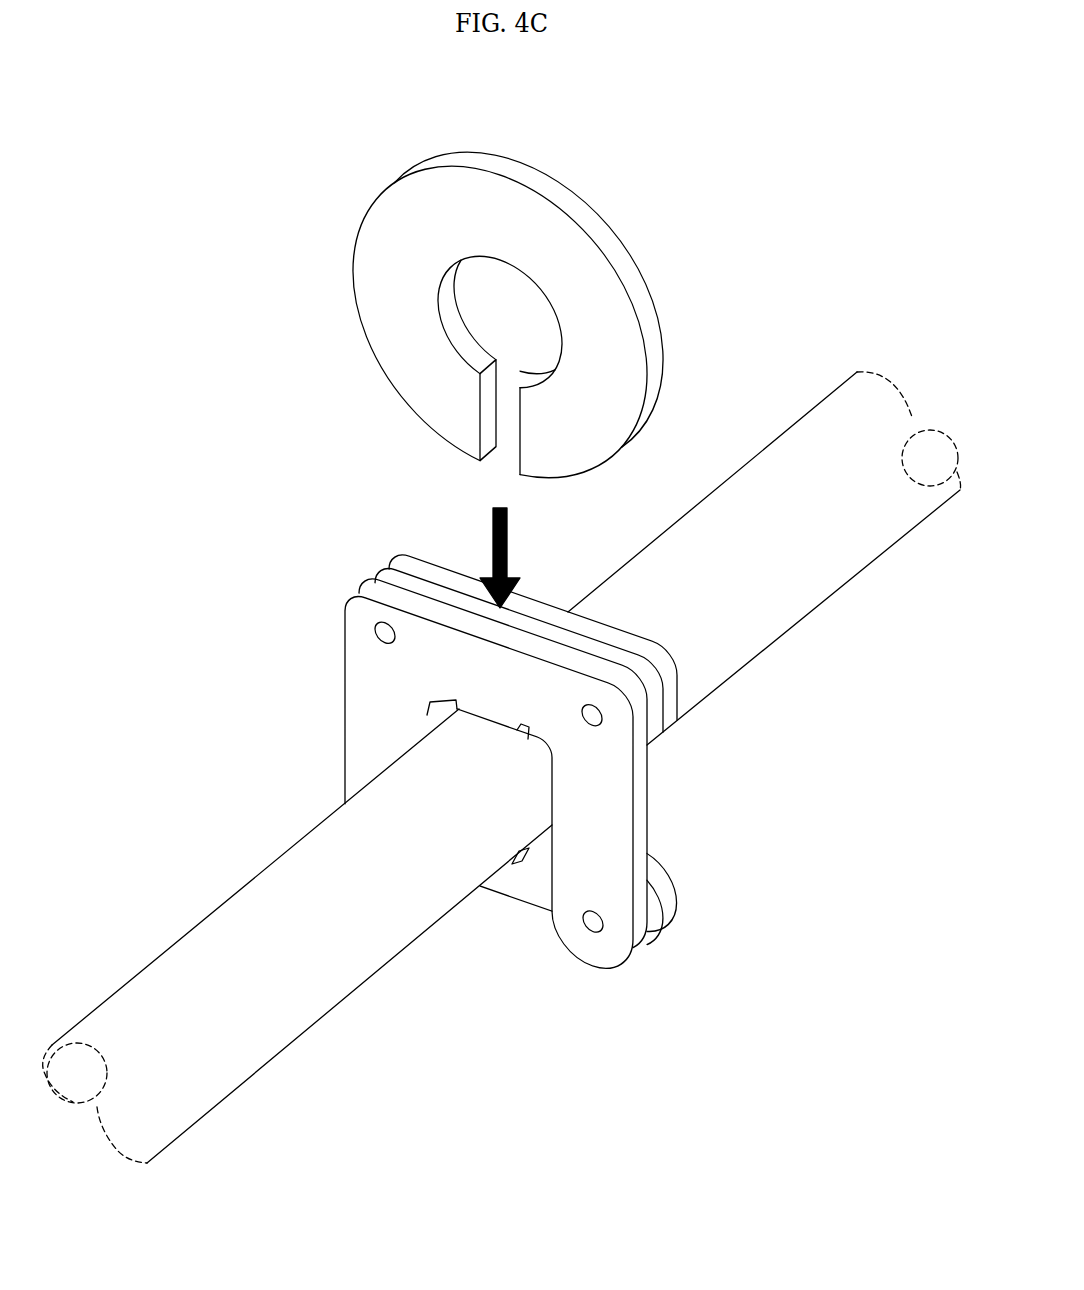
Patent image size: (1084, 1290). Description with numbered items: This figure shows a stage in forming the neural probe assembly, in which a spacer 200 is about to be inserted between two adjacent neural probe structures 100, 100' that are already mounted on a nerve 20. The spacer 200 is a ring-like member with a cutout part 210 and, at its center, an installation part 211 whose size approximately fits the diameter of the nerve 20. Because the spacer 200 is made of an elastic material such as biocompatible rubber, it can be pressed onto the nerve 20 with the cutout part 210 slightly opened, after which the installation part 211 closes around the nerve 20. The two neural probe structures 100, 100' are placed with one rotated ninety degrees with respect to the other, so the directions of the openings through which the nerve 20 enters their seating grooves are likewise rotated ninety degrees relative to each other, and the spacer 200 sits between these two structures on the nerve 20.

The nerve 20 is at (800, 575).
The neural probe structure 100 is at (469, 744).
The neural probe structure 100' is at (437, 776).
The spacer 200 is at (470, 314).
The cutout part 210 is at (504, 437).
The installation part 211 is at (488, 310).